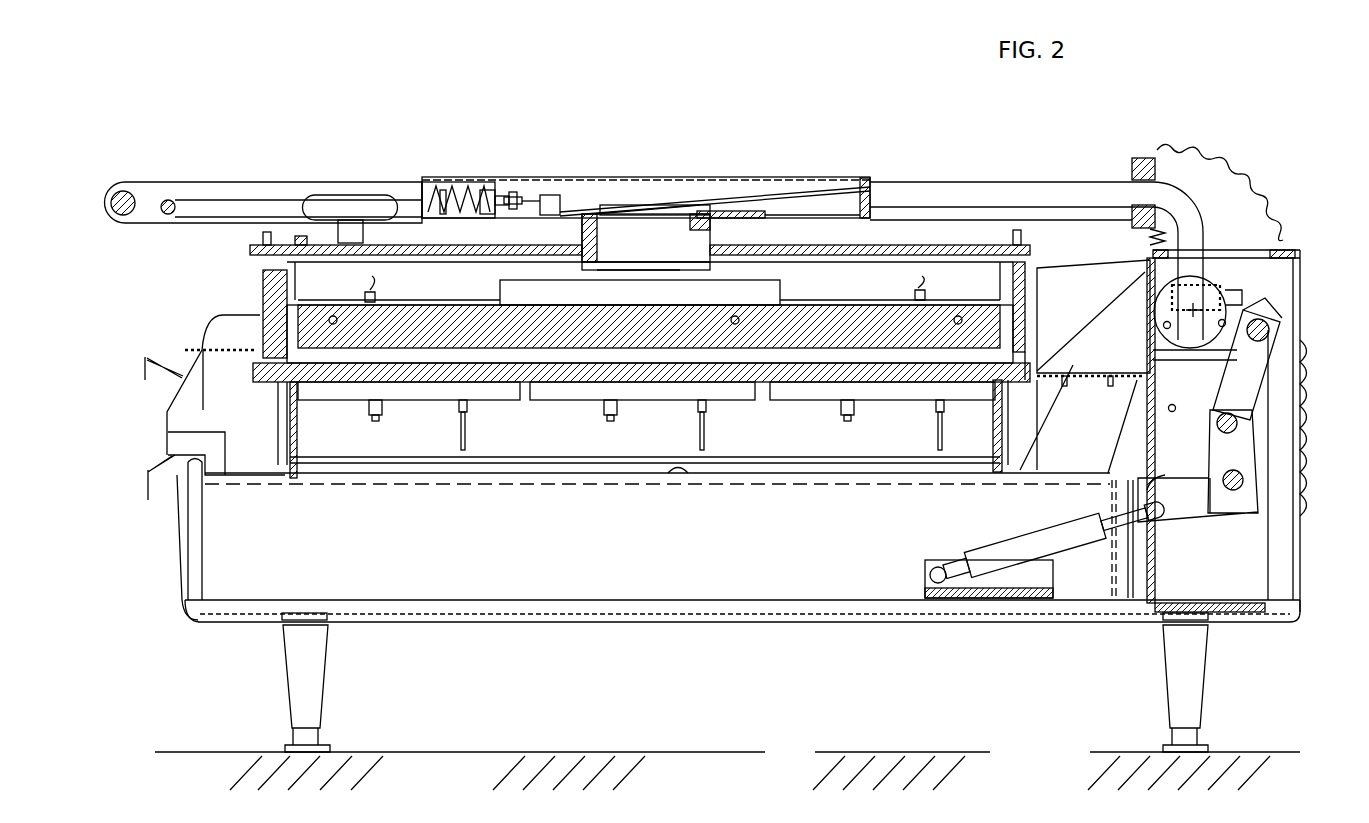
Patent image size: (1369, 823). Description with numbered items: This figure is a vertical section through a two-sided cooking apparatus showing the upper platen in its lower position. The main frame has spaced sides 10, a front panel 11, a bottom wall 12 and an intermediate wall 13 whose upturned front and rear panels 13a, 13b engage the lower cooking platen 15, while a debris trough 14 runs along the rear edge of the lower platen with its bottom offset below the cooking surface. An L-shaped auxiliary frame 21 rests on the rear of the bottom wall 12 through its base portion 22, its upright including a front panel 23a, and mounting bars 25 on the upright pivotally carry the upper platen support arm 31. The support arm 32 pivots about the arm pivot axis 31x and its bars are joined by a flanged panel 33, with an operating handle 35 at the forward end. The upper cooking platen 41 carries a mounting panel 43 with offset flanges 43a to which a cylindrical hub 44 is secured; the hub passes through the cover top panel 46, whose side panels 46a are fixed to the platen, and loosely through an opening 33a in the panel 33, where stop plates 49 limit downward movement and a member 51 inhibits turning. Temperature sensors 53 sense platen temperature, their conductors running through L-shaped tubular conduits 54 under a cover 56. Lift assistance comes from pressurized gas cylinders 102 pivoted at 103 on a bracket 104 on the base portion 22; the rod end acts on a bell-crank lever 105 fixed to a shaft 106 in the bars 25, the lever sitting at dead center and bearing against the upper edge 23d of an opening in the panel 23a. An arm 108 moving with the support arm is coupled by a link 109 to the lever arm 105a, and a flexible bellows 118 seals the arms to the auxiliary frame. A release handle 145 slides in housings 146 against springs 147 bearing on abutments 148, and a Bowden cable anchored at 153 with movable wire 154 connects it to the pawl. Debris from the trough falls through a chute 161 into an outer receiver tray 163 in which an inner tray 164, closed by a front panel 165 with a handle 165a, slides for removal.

The sides 10 is at (238, 325).
The front panel 11 is at (178, 362).
The bottom wall 12 is at (407, 624).
The intermediate wall 13 is at (712, 460).
The front panel 13a is at (287, 438).
The rear panel 13b is at (1000, 422).
The debris trough 14 is at (1090, 372).
The lower cooking platen 15 is at (560, 365).
The auxiliary frame 21 is at (1270, 546).
The base portion 22 is at (1140, 622).
The front panel 23a is at (1162, 445).
The upper edge 23d is at (1112, 500).
The mounting bars 25 is at (1245, 300).
The upper platen support arm 31 is at (243, 162).
The arm pivot axis 31x is at (1195, 310).
The upper platen support arm 32 is at (264, 181).
The flanged panel 33 is at (851, 188).
The opening 33a is at (600, 212).
The operating handle 35 is at (112, 190).
The upper cooking platen 41 is at (678, 325).
The upper platen mounting panel 43 is at (757, 273).
The offset flanges 43a is at (822, 302).
The cylindrical hub 44 is at (597, 255).
The top panel 46 is at (893, 255).
The side panels 46a is at (943, 270).
The stop plates 49 is at (672, 212).
The member 51 is at (749, 210).
The temperature sensors 53 is at (378, 292).
The tubular conduits 54 is at (1072, 183).
The cover 56 is at (804, 176).
The pressurized gas cylinders 102 is at (1038, 538).
The pivot 103 is at (932, 570).
The bracket 104 is at (1000, 600).
The lever 105 is at (1224, 502).
The arm 105a is at (1240, 450).
The shaft 106 is at (1244, 482).
The arm 108 is at (1282, 318).
The link 109 is at (1252, 370).
The flexible bellows 118 is at (1200, 150).
The release handle 145 is at (167, 200).
The housings 146 is at (431, 190).
The springs 147 is at (459, 195).
The abutments 148 is at (486, 195).
The Bowden wire housing anchor 153 is at (552, 197).
The movable wire 154 is at (526, 198).
The chute 161 is at (1100, 438).
The outer receiver tray 163 is at (690, 475).
The inner receiver tray 164 is at (637, 488).
The front panel 165 is at (203, 540).
The handle 165a is at (148, 490).